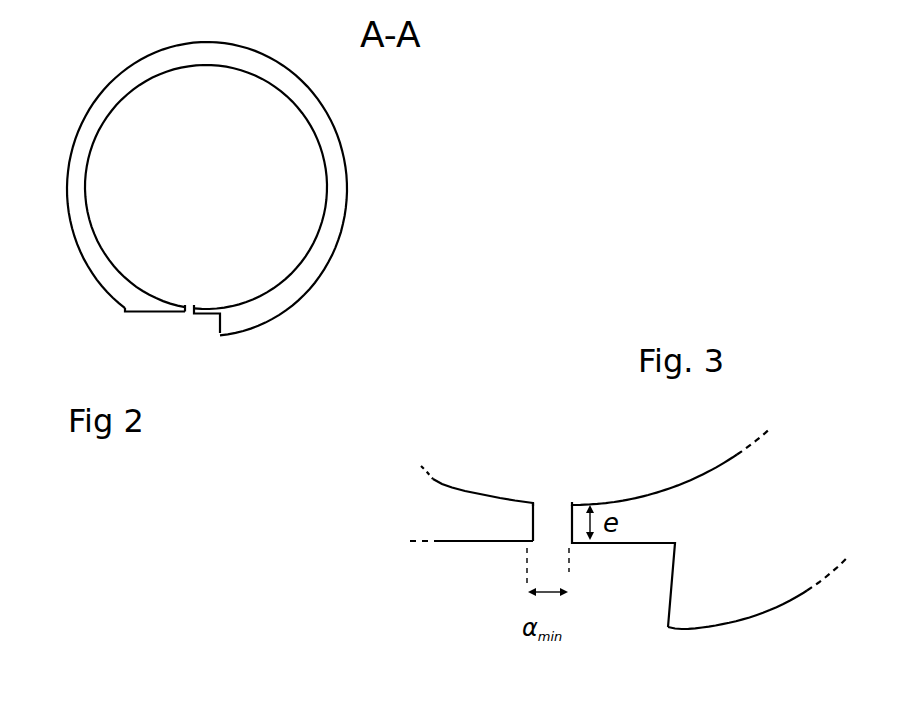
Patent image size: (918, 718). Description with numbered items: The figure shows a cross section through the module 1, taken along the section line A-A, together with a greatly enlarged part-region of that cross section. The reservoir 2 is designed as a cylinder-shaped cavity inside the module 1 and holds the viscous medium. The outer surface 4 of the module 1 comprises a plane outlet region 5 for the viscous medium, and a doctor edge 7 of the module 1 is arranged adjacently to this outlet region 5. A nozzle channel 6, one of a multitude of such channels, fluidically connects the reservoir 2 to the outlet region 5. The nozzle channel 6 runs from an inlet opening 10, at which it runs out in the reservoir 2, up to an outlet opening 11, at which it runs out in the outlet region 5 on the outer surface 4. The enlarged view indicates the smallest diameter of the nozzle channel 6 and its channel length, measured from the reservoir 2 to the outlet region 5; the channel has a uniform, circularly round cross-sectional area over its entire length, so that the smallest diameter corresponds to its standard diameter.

In FIG. 2, the module 1 is at (384, 161).
In FIG. 2, the reservoir 2 is at (236, 158).
In FIG. 3, the reservoir 2 is at (503, 455).
In FIG. 2, the outer surface 4 is at (121, 73).
In FIG. 3, the outer surface 4 is at (742, 620).
In FIG. 2, the outlet region 5 is at (163, 313).
In FIG. 3, the outlet region 5 is at (472, 543).
In FIG. 2, the nozzle channel 6 is at (180, 313).
In FIG. 3, the nozzle channel 6 is at (532, 526).
In FIG. 2, the doctor edge 7 is at (220, 331).
In FIG. 3, the doctor edge 7 is at (669, 618).
In FIG. 2, the inlet opening 10 is at (194, 301).
In FIG. 3, the inlet opening 10 is at (558, 500).
In FIG. 2, the outlet opening 11 is at (190, 314).
In FIG. 3, the outlet opening 11 is at (557, 544).